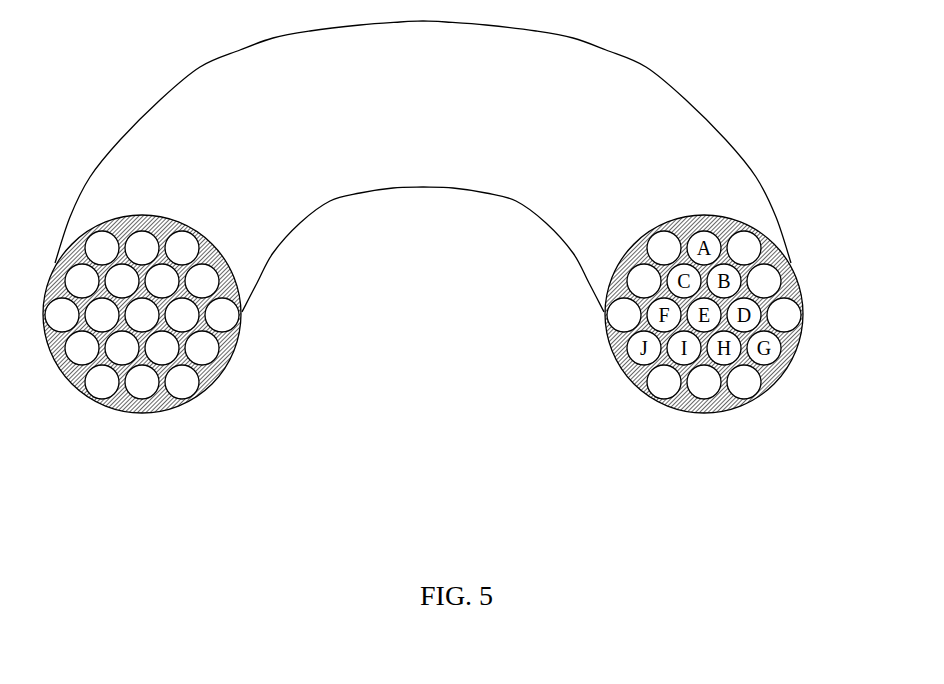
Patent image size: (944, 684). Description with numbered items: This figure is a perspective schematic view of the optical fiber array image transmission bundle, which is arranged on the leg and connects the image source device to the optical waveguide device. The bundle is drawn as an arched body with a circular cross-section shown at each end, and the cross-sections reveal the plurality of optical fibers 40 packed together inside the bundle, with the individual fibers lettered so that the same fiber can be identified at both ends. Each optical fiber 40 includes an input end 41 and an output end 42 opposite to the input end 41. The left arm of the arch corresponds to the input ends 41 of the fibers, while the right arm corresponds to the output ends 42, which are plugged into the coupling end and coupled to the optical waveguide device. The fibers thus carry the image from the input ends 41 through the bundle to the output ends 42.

The optical fiber 40 is at (177, 383).
The input end 41 is at (163, 127).
The output end 42 is at (673, 143).